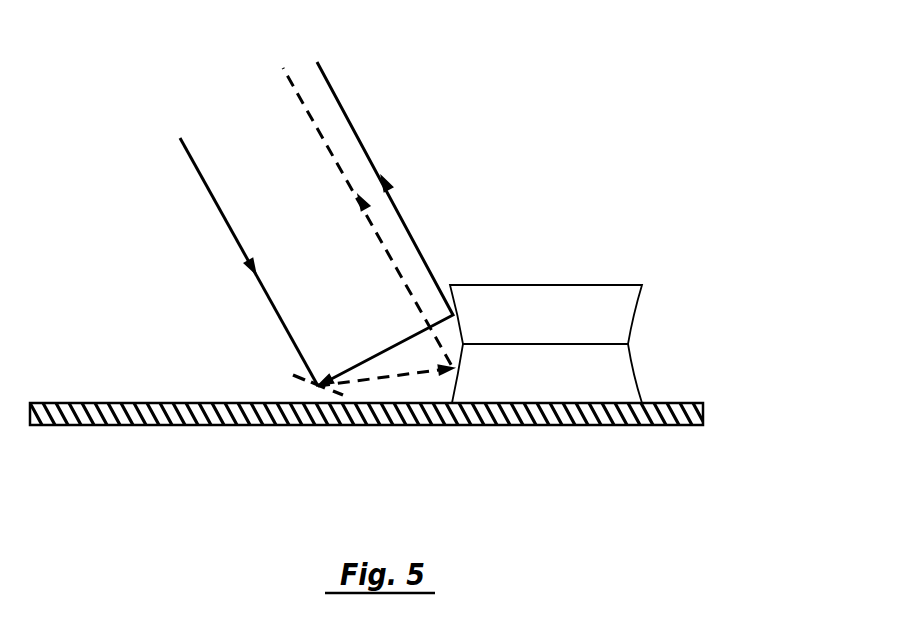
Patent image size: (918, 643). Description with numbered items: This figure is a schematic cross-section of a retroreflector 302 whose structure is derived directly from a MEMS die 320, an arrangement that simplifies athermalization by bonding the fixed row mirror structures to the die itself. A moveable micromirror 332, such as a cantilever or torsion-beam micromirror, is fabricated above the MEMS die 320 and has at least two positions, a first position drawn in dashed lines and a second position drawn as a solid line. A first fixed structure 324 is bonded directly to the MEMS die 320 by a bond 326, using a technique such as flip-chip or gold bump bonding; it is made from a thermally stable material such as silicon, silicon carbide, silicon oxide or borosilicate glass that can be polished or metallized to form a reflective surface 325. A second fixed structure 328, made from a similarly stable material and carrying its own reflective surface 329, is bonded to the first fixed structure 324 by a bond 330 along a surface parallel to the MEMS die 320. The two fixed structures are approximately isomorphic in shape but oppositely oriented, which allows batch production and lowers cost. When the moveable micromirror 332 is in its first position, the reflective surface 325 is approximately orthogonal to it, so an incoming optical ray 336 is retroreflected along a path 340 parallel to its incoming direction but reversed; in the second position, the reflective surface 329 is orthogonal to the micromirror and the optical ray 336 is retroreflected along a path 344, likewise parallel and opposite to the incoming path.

The retroreflector 302 is at (538, 118).
The MEMS die 320 is at (703, 413).
The first fixed structure 324 is at (636, 378).
The reflective surface 325 is at (453, 385).
The bond 326 is at (492, 403).
The second fixed structure 328 is at (637, 315).
The reflective surface 329 is at (450, 285).
The bond 330 is at (492, 343).
The moveable micromirror 332 is at (290, 388).
The optical ray 336 is at (205, 185).
The path 340 is at (325, 140).
The path 344 is at (347, 112).